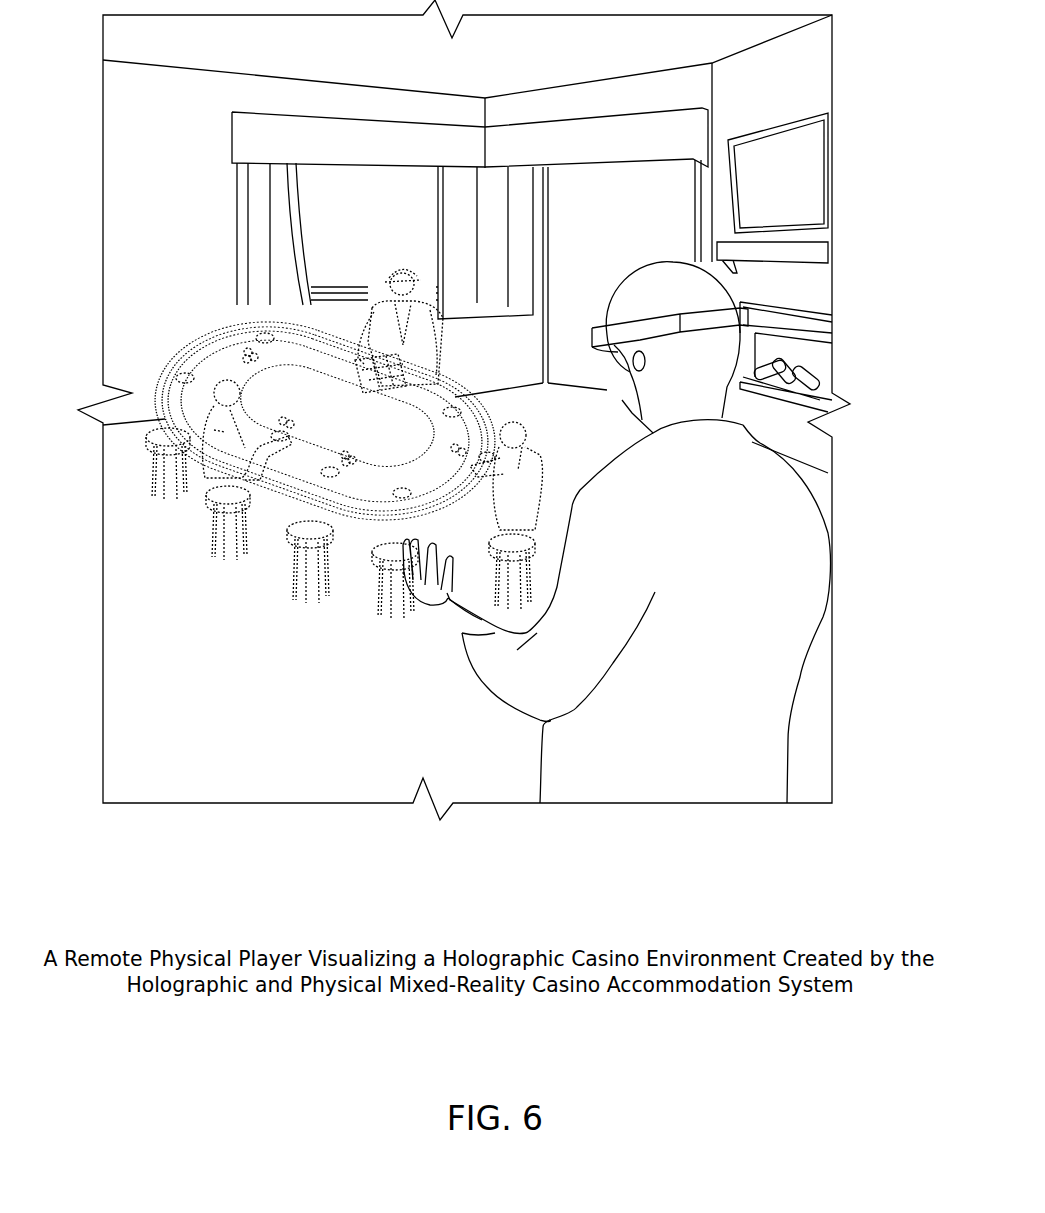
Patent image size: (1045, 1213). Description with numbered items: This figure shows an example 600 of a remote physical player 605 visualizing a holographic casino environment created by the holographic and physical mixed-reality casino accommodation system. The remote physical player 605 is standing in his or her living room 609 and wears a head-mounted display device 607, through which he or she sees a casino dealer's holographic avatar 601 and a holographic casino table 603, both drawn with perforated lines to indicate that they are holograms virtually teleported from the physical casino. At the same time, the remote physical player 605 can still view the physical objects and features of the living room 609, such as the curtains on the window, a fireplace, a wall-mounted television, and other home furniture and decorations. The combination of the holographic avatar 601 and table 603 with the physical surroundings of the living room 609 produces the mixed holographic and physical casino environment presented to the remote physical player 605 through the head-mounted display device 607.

The example of a remote physical player visualizing a holographic casino environment 600 is at (459, 888).
The casino dealer's holographic avatar 601 is at (365, 301).
The holographic casino table 603 is at (329, 412).
The remote physical player 605 is at (768, 598).
The head-mounted display (HMD) device 607 is at (653, 320).
The living room 609 is at (467, 383).